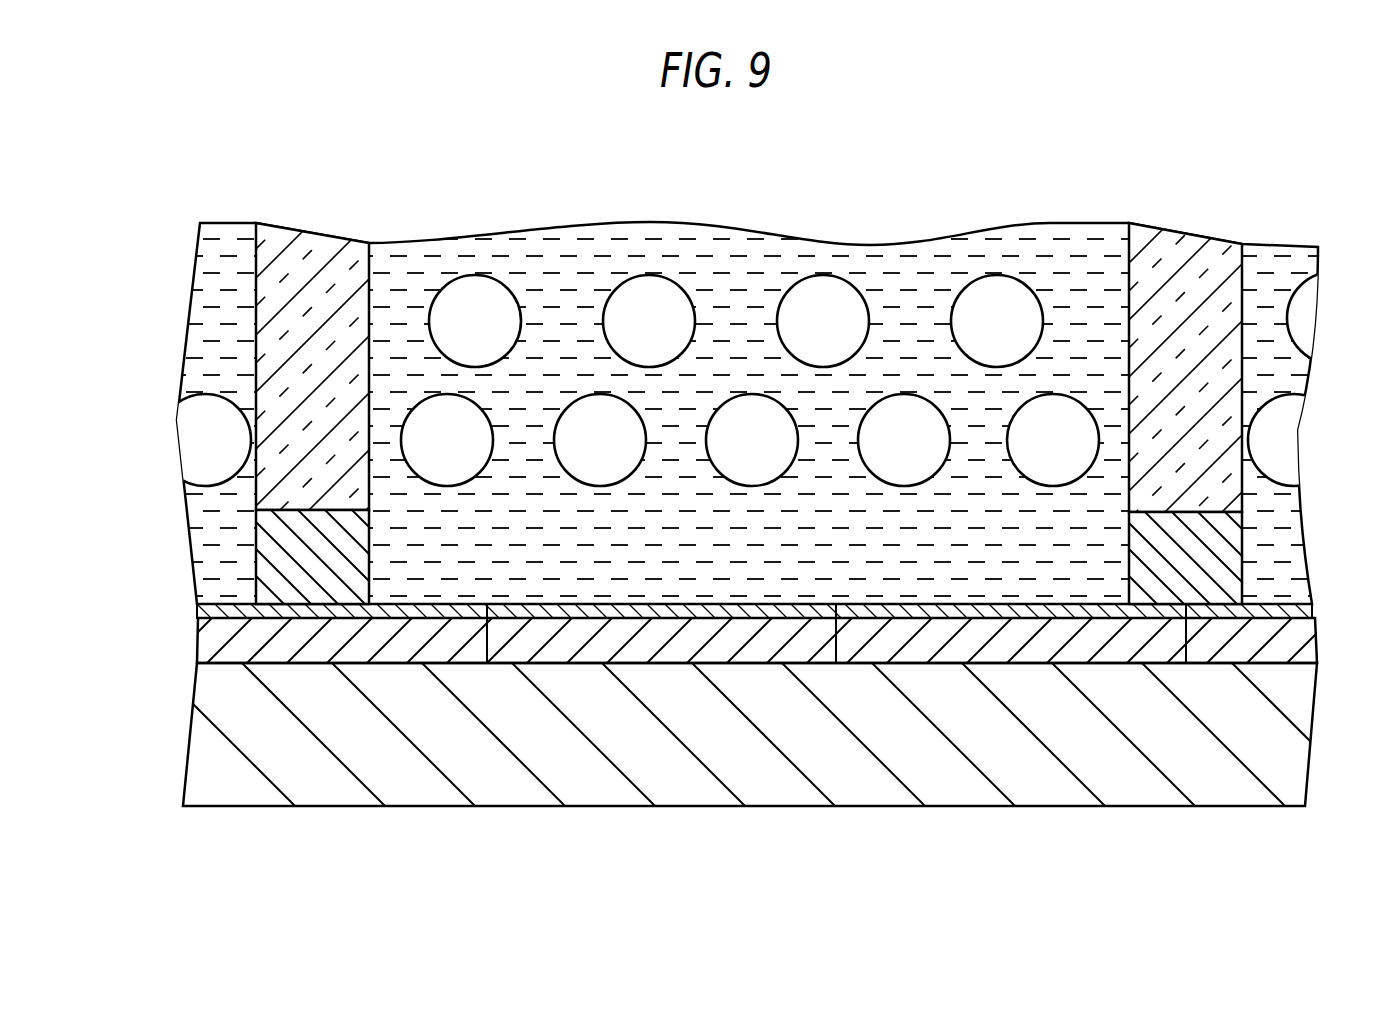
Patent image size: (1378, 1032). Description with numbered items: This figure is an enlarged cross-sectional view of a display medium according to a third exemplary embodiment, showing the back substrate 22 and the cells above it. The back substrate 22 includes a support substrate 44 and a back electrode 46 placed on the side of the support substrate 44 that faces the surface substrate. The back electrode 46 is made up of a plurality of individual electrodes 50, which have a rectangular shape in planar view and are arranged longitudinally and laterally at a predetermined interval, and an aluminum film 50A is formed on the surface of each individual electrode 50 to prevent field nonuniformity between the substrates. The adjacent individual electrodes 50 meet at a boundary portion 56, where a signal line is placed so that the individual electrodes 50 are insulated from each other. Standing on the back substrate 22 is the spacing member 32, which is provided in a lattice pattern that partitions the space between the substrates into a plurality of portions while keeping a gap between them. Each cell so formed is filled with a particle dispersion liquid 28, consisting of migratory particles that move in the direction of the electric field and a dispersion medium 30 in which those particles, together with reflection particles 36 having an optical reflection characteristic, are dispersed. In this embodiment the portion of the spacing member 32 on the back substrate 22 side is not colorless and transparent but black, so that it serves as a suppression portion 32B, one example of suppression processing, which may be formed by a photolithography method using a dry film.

The back substrate 22 is at (721, 737).
The particle dispersion liquid 28 is at (578, 258).
The dispersion medium 30 is at (747, 376).
The spacing member 32 is at (372, 263).
The suppression portion 32B is at (277, 566).
The reflection particles 36 is at (817, 293).
The support substrate 44 is at (228, 733).
The back electrode 46 is at (747, 737).
The individual electrodes 50 is at (320, 663).
The aluminum film 50A is at (387, 617).
The boundary portion 56 is at (506, 612).